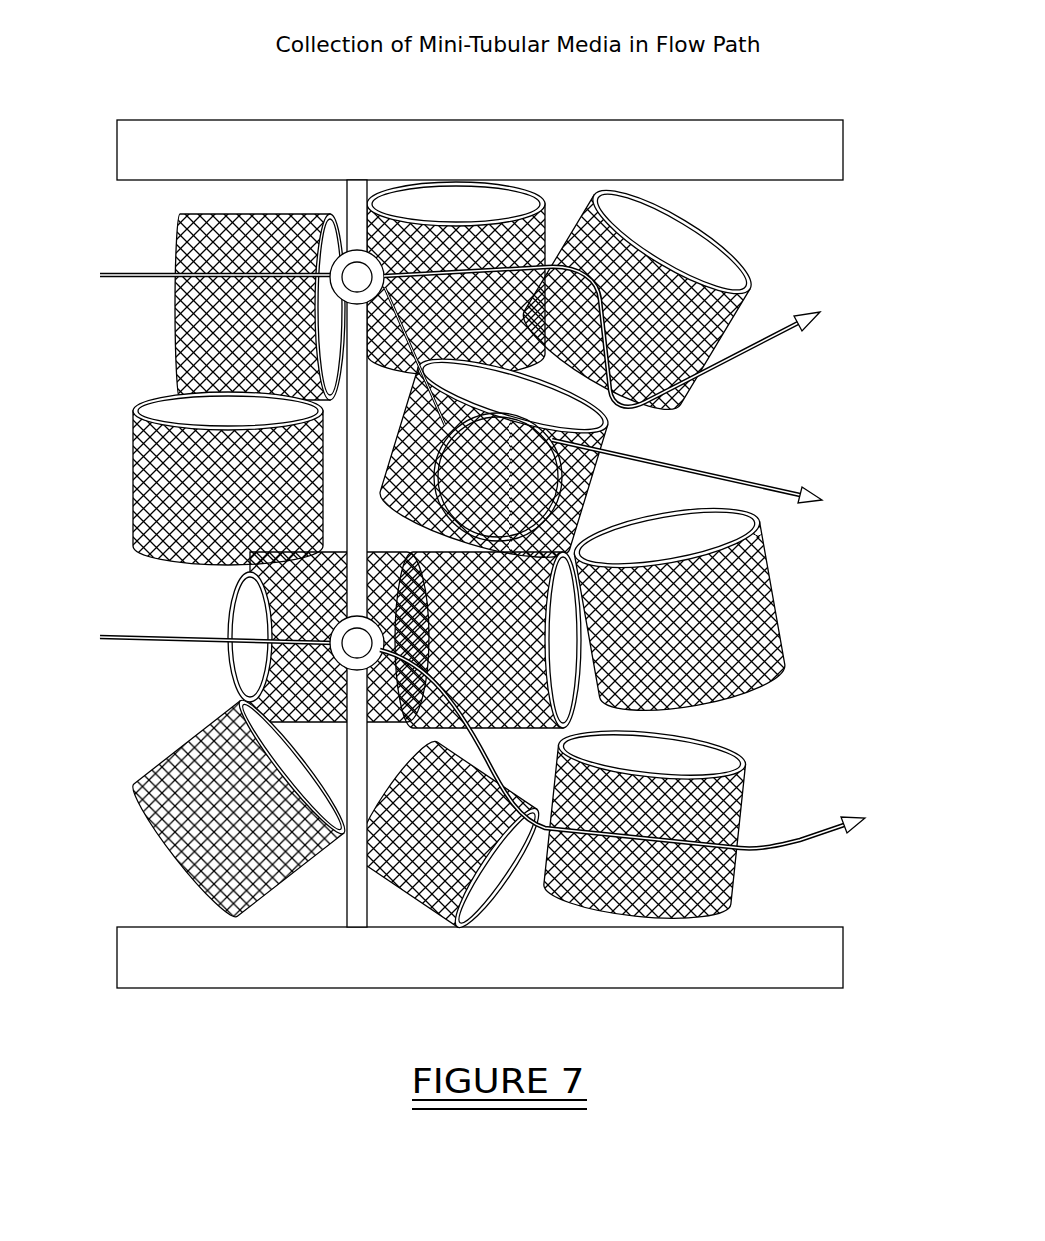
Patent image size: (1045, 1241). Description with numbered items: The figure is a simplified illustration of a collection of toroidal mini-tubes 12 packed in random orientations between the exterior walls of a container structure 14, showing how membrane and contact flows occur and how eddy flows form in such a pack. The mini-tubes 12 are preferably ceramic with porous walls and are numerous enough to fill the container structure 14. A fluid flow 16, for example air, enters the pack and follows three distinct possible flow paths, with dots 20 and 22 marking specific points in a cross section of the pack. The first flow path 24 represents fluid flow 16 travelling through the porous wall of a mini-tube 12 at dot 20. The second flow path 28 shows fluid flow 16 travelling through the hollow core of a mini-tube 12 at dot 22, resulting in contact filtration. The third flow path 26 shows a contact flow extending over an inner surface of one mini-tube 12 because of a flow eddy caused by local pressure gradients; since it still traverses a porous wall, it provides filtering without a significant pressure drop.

The mini-tubes 12 is at (200, 228).
The container structure 14 is at (843, 155).
The fluid flow 16 is at (112, 290).
The dot 20 is at (350, 282).
The dot 22 is at (350, 648).
The first flow path 24 is at (770, 345).
The third flow path 26 is at (755, 465).
The second flow path 28 is at (800, 848).